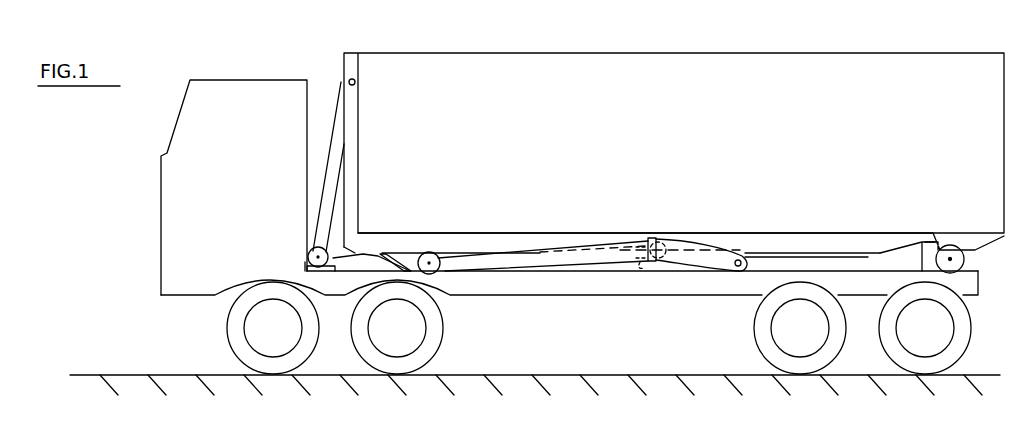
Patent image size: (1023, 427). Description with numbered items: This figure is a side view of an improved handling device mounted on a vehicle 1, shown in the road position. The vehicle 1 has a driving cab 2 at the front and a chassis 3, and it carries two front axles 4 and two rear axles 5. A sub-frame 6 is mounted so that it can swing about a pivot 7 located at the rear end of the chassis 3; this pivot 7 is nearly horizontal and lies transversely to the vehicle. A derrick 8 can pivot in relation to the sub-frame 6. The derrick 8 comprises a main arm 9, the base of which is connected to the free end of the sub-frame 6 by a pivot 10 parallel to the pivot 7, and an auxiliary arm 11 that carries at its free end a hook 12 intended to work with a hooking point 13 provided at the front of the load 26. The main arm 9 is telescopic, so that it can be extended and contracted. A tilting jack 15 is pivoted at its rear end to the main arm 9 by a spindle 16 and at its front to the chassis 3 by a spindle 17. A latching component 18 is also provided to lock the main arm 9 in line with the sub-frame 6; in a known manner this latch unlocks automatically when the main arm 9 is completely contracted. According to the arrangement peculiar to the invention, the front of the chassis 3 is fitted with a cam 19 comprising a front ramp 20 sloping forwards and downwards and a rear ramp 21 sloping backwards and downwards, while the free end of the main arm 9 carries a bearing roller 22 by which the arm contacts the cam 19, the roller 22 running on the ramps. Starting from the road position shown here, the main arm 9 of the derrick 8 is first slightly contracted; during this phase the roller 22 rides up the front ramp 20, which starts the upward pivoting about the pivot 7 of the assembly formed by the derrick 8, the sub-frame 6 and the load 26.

The vehicle 1 is at (333, 36).
The driving cab 2 is at (231, 167).
The chassis 3 is at (498, 285).
The front axles 4 is at (282, 339).
The rear axles 5 is at (809, 339).
The sub-frame 6 is at (783, 263).
The pivot 7 is at (966, 257).
The derrick 8 is at (326, 150).
The main arm 9 is at (656, 240).
The pivot 10 is at (730, 254).
The auxiliary arm 11 is at (340, 156).
The hook 12 is at (340, 78).
The hooking point 13 is at (357, 80).
The tilting jack 15 is at (468, 258).
The spindle 16 is at (695, 232).
The spindle 17 is at (432, 255).
The latching component 18 is at (645, 262).
The cam 19 is at (363, 265).
The front ramp 20 is at (345, 250).
The rear ramp 21 is at (396, 262).
The bearing roller 22 is at (306, 263).
The load 26 is at (757, 102).